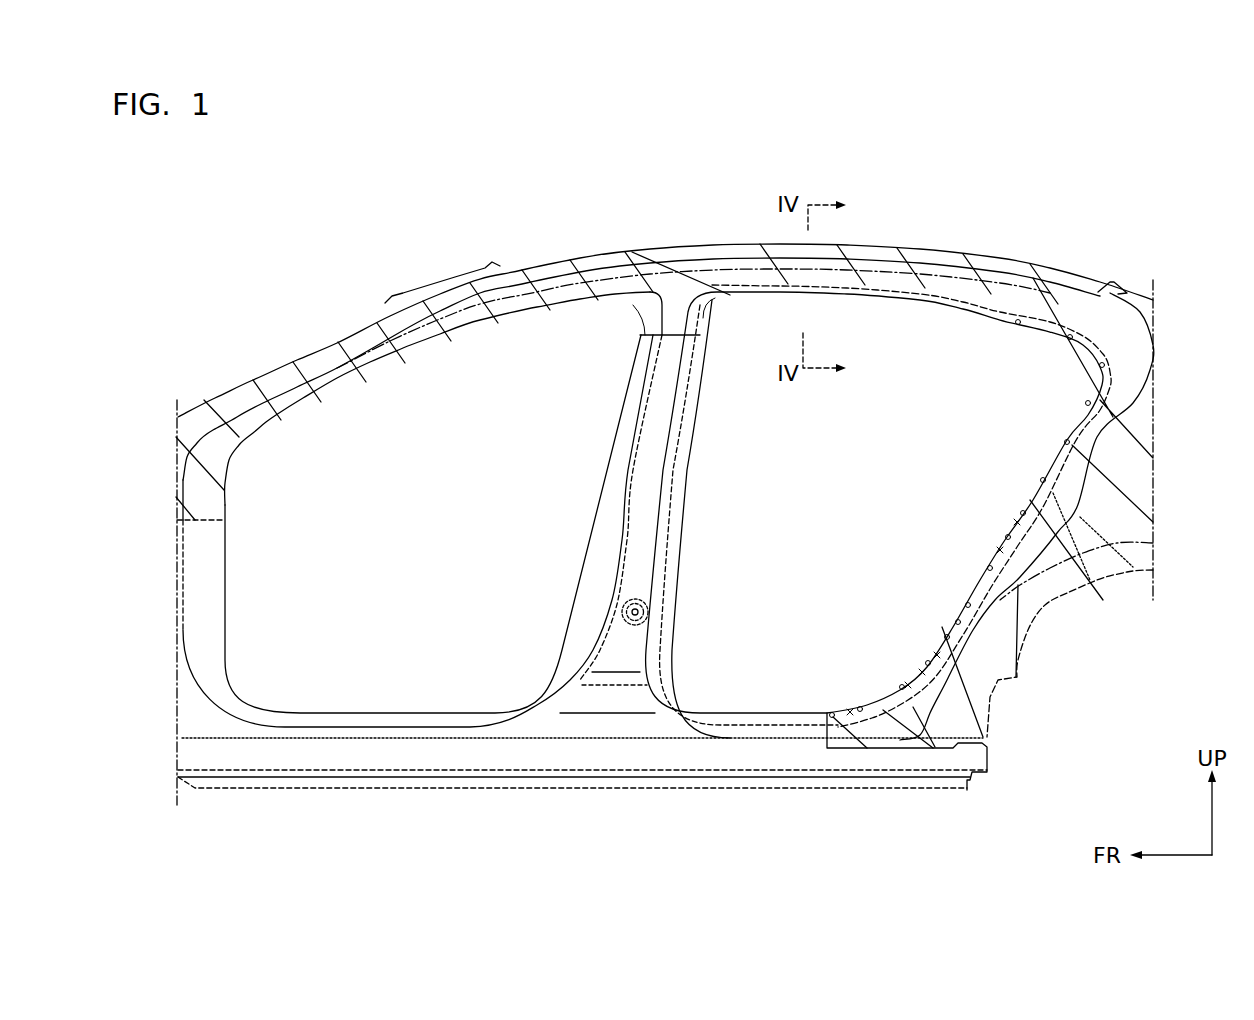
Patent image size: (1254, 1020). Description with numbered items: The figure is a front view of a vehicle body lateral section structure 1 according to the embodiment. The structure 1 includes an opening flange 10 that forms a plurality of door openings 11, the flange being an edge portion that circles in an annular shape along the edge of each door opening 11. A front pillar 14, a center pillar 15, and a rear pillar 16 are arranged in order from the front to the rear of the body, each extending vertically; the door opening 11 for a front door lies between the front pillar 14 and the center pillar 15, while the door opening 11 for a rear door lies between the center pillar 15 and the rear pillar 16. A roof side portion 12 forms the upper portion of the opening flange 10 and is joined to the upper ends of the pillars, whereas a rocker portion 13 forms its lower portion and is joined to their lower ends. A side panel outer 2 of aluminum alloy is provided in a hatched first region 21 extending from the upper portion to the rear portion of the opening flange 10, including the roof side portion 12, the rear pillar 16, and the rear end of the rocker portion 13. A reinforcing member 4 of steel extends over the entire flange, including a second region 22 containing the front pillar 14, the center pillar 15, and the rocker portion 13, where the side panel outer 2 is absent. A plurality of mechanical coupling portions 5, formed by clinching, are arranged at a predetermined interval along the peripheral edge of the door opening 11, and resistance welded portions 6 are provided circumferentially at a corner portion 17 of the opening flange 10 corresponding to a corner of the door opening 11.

The vehicle body lateral section structure 1 is at (970, 185).
The opening flange 10 is at (868, 213).
The side panel outer 2 is at (455, 290).
The roof side portion 12 is at (650, 292).
The corner portion 17 is at (700, 290).
The front pillar 14 is at (199, 568).
The door opening 11 is at (223, 553).
The center pillar 15 is at (658, 497).
The reinforcing member 4 is at (624, 690).
The rocker portion 13 is at (472, 740).
The second region 22 is at (342, 755).
The rear pillar 16 is at (1053, 522).
The first region 21 is at (1140, 470).
The mechanical coupling portion 5 is at (383, 355).
The resistance welded portion 6 is at (637, 310).